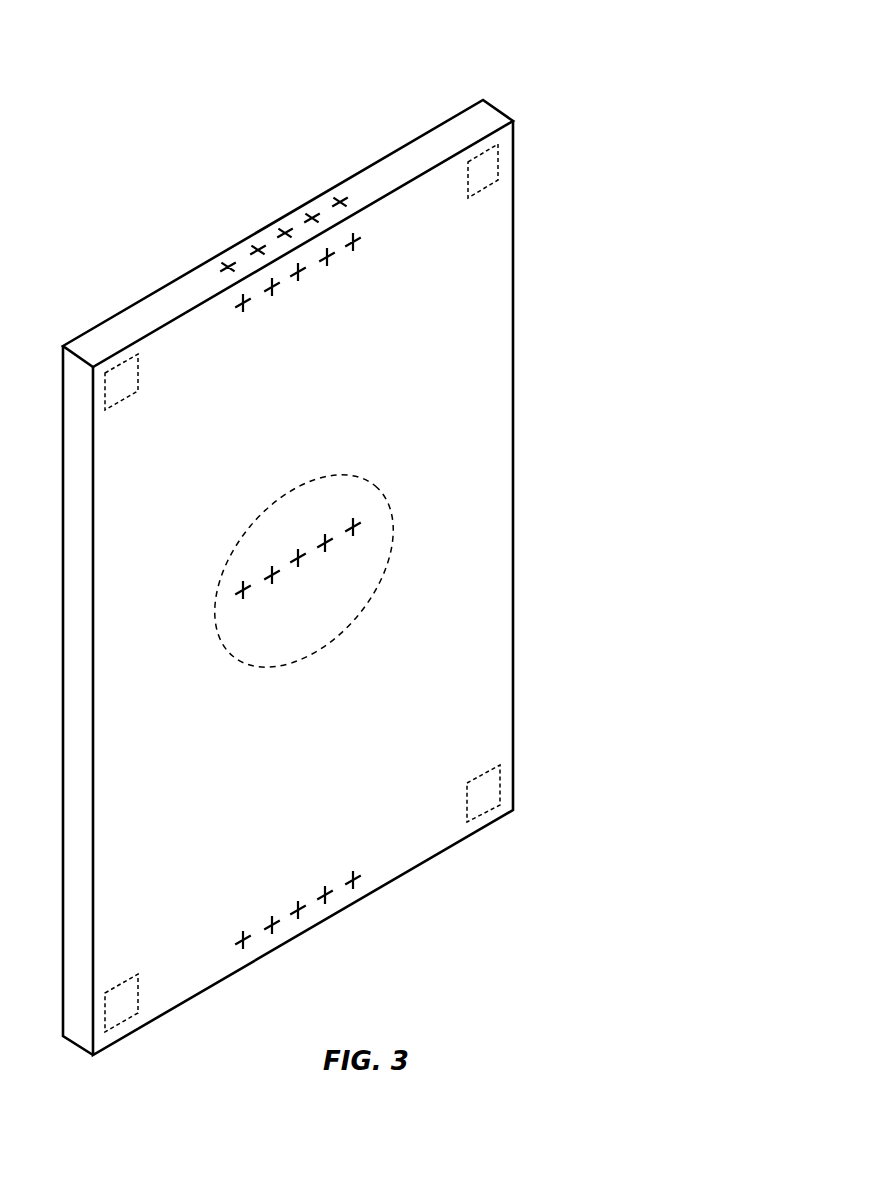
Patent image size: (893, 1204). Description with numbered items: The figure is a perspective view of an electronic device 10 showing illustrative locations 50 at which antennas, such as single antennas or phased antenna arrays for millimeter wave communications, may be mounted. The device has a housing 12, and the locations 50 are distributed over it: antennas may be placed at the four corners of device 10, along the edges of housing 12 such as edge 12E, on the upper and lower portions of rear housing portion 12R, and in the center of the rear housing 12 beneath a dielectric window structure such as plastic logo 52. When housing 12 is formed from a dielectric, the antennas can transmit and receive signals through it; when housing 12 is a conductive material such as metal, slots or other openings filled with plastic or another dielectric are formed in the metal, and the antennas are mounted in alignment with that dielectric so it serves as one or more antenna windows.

The electronic device 10 is at (581, 66).
The housing 12 is at (533, 262).
The edge 12E is at (410, 165).
The rear housing portion 12R is at (495, 318).
The locations 50 is at (338, 180).
The plastic logo 52 is at (343, 478).